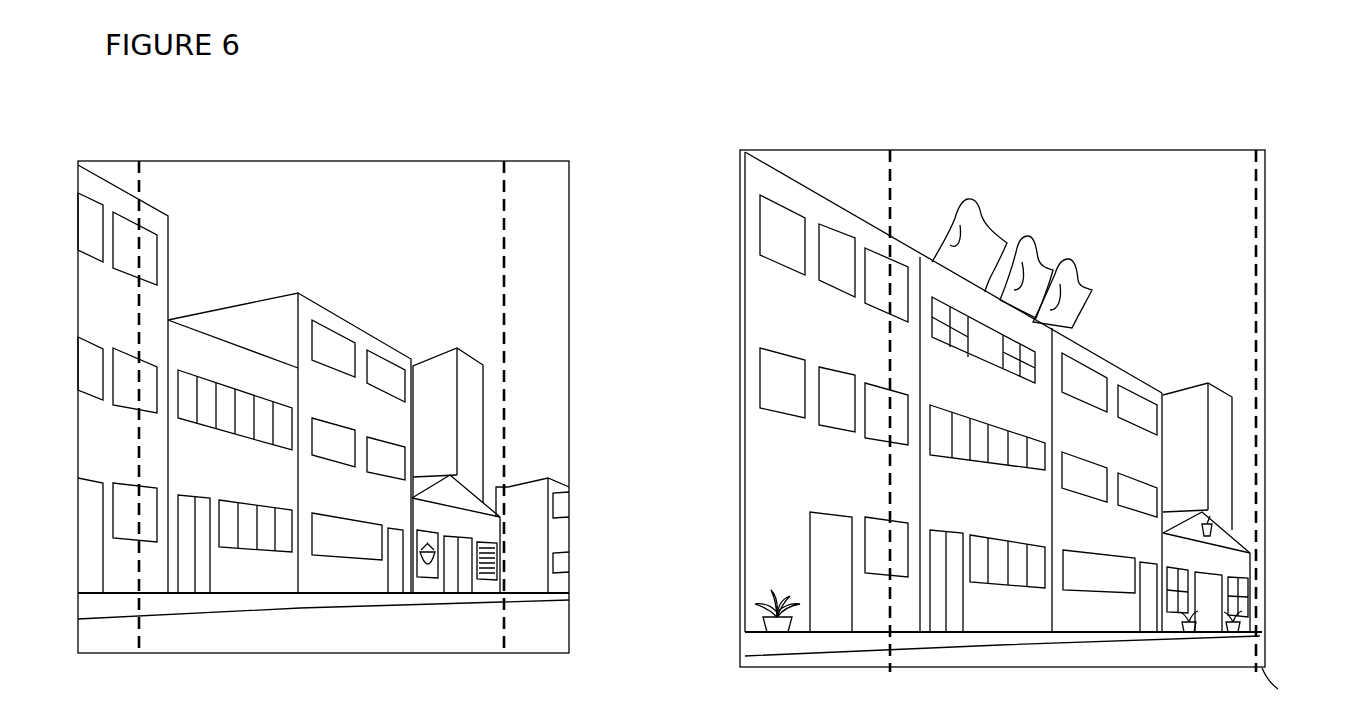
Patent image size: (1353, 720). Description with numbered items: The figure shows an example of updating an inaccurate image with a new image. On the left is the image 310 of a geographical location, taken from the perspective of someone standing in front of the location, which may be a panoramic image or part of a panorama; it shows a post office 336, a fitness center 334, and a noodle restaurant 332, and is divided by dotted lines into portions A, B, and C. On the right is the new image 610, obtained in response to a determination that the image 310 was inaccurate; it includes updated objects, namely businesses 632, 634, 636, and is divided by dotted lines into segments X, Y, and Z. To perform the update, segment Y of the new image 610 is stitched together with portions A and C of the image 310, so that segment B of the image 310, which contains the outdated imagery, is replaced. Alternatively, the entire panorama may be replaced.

The image 310 is at (541, 161).
The noodle restaurant 332 is at (476, 500).
The fitness center 334 is at (341, 311).
The post office 336 is at (181, 332).
The new image 610 is at (1264, 150).
The business 632 is at (1224, 527).
The business 634 is at (1092, 347).
The business 636 is at (932, 278).